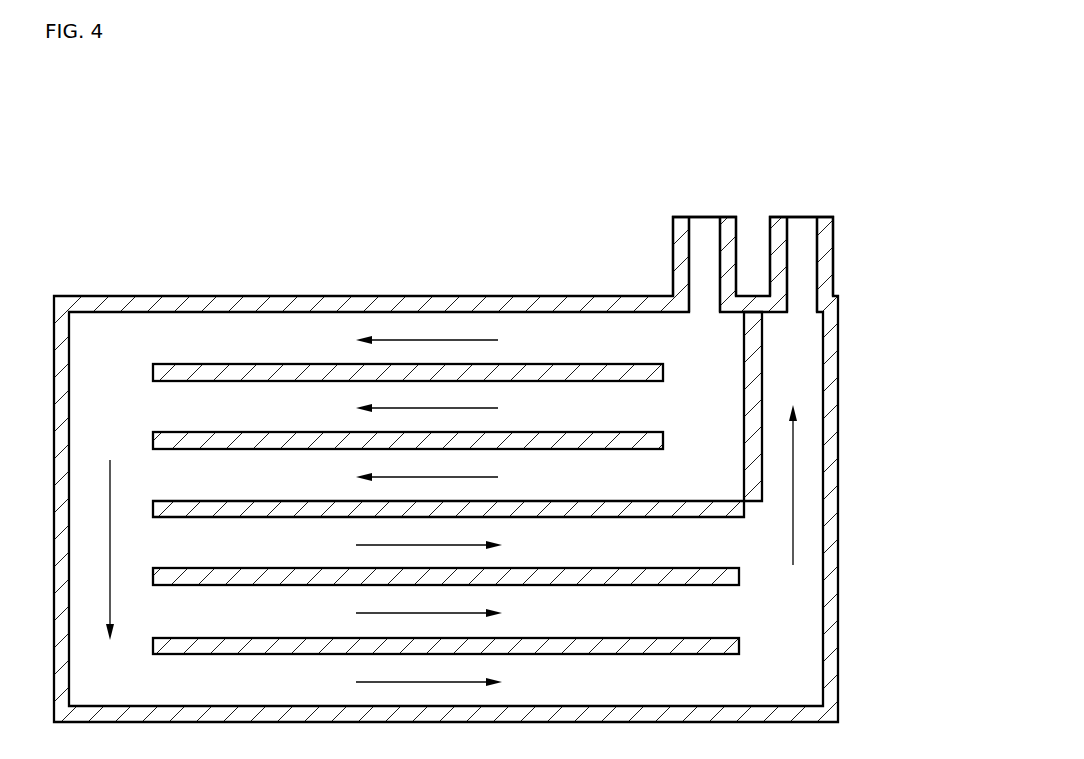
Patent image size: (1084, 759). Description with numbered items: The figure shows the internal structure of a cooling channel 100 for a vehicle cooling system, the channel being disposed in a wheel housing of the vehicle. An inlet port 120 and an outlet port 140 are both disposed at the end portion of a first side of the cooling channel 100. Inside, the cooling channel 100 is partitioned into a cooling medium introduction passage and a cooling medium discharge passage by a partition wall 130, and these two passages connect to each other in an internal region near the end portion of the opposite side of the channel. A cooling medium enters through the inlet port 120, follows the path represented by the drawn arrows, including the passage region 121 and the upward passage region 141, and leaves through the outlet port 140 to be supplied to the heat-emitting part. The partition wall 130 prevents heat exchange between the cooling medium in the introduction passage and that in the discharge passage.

The cooling channel 100 is at (453, 240).
The inlet port 120 is at (698, 227).
The inlet flow path 121 is at (402, 338).
The partition wall 130 is at (257, 508).
The outlet port 140 is at (805, 227).
The outlet flow path 141 is at (795, 477).